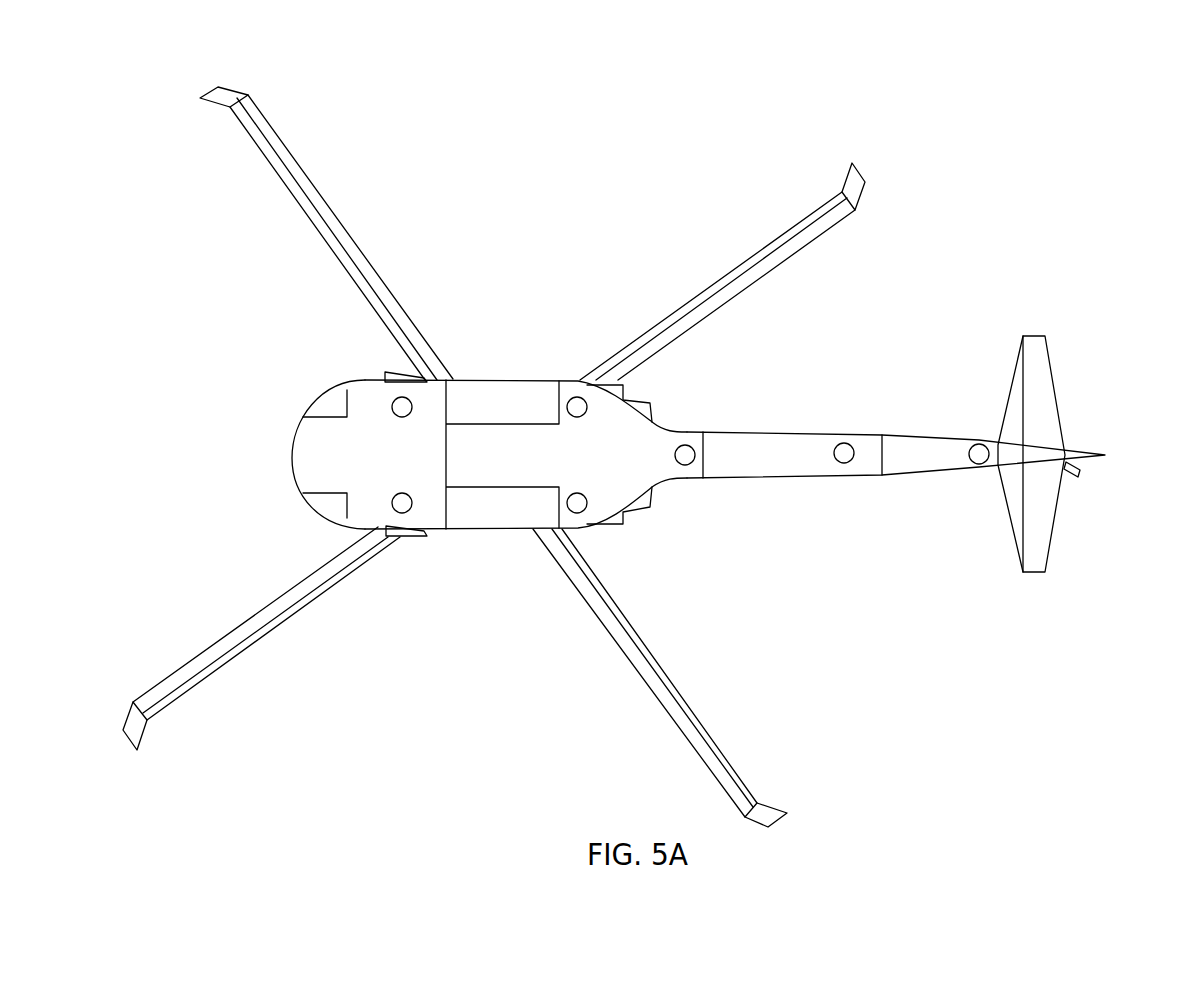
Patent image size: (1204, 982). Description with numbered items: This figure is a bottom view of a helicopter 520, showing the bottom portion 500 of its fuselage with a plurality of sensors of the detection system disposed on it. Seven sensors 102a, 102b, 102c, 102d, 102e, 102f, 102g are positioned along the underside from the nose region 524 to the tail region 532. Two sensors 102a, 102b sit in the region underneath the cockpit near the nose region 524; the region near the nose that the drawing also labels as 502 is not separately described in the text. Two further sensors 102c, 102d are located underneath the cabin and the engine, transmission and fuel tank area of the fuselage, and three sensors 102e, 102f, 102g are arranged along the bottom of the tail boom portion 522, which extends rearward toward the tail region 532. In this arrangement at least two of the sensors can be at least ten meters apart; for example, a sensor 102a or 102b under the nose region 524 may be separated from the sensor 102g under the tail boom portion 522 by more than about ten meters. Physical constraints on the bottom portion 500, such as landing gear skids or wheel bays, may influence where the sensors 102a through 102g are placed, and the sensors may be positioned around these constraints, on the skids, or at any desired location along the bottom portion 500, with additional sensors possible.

The bottom portion 500 is at (655, 439).
The cockpit 502 is at (317, 448).
The helicopter 520 is at (508, 529).
The tail boom portion 522 is at (778, 472).
The nose region 524 is at (297, 480).
The tail region 532 is at (994, 493).
The sensor 102a is at (407, 513).
The sensor 102b is at (394, 399).
The sensor 102c is at (584, 512).
The sensor 102d is at (572, 397).
The sensor 102e is at (686, 445).
The sensor 102f is at (845, 443).
The sensor 102g is at (977, 444).